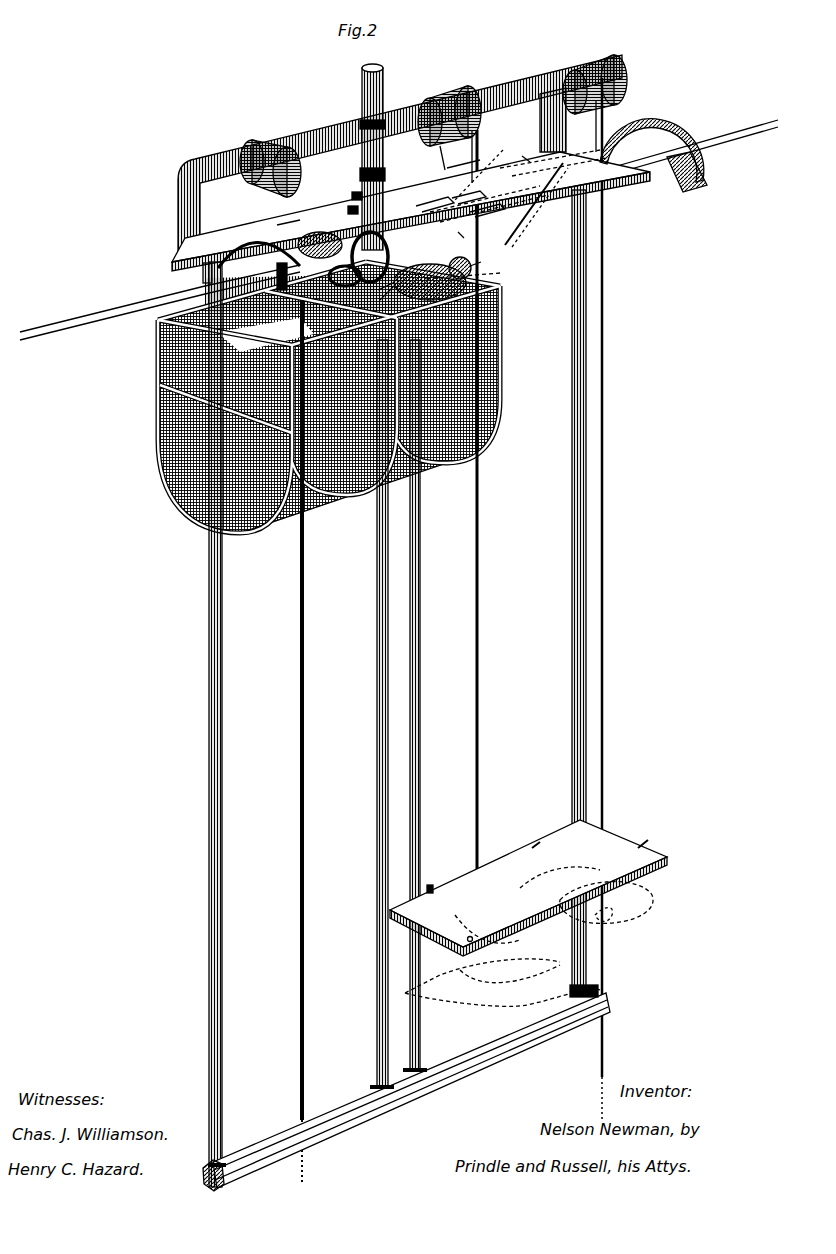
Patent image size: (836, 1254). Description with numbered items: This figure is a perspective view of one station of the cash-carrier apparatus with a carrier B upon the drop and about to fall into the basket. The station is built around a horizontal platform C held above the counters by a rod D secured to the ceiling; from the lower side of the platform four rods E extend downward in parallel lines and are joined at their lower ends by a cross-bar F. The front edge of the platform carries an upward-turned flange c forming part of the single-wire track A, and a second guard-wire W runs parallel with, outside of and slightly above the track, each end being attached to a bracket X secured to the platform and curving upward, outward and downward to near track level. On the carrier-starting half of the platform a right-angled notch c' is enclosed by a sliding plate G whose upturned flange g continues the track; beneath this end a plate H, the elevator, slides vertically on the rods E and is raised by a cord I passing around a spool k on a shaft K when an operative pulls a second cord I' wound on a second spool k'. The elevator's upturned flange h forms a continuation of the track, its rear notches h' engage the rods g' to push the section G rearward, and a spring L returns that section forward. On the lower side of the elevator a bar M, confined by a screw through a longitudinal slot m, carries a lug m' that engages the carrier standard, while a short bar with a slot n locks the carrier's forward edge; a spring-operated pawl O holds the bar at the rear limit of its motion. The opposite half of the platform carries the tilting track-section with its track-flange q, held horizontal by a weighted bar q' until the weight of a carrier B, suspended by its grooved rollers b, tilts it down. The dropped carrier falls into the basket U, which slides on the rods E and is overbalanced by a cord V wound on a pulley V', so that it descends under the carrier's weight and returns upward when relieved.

The guard-wire W is at (399, 226).
The single-wire track A is at (399, 233).
The basket U is at (159, 392).
The rods E is at (387, 688).
The cord V is at (304, 741).
The upright post E' is at (398, 713).
The cord I is at (482, 501).
The operating-cord I' is at (608, 599).
The horizontal platform C is at (411, 210).
The right-angled notch c' is at (466, 190).
The plate (movable track-section) G is at (487, 205).
The upward-turned flange c is at (489, 188).
The upturned flange g is at (527, 204).
The rods g' is at (540, 207).
The pulley V' is at (275, 144).
The rod D is at (364, 157).
The shaft K is at (461, 116).
The spool k is at (426, 155).
The second spool k' is at (603, 84).
The spring L is at (456, 158).
The cord l is at (476, 156).
The cord l' is at (603, 126).
The bracket X is at (652, 150).
The grooved rollers b is at (343, 249).
The carrier B is at (489, 631).
The track-flange q is at (259, 266).
The bar q' is at (221, 247).
The plate (elevator) H is at (528, 888).
The upturned flange h is at (590, 833).
The notches h' is at (435, 880).
The bar M is at (609, 898).
The longitudinal slot m is at (560, 874).
The longitudinal slot n is at (604, 909).
The lug m' is at (507, 949).
The spring-operated pawl O is at (475, 951).
The cross-bar F is at (406, 1088).